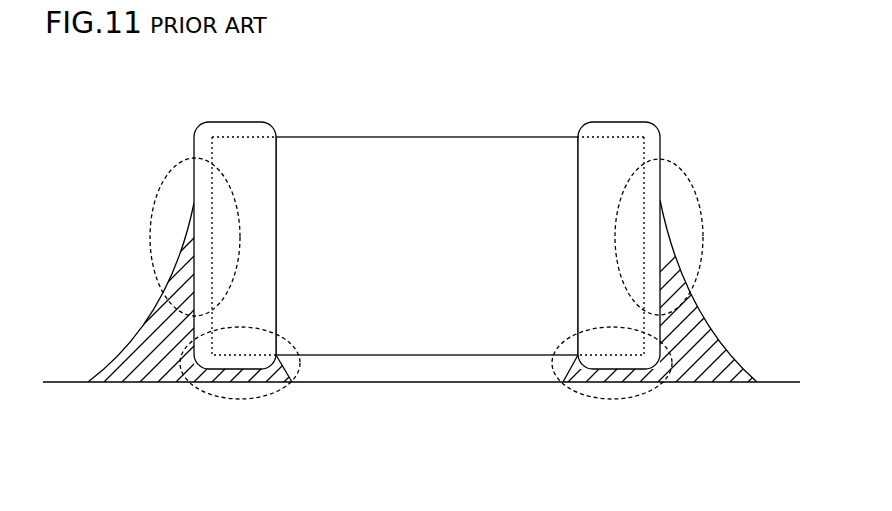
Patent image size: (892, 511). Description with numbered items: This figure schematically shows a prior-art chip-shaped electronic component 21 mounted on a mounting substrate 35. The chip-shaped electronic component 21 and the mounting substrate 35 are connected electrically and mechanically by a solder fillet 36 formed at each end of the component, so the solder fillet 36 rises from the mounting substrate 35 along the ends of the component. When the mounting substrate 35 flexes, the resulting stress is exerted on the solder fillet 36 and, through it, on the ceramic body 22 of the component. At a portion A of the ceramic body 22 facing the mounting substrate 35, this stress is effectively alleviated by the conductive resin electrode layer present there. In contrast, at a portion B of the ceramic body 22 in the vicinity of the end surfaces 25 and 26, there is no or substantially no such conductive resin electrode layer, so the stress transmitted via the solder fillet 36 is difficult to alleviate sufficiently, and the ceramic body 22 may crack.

The chip-shaped electronic component 21 is at (434, 205).
The ceramic body 22 is at (480, 150).
The end surface 25 is at (208, 209).
The end surface 26 is at (647, 228).
The mounting substrate 35 is at (780, 382).
The solder fillet 36 is at (137, 340).
The portion A is at (232, 400).
The portion B is at (158, 200).